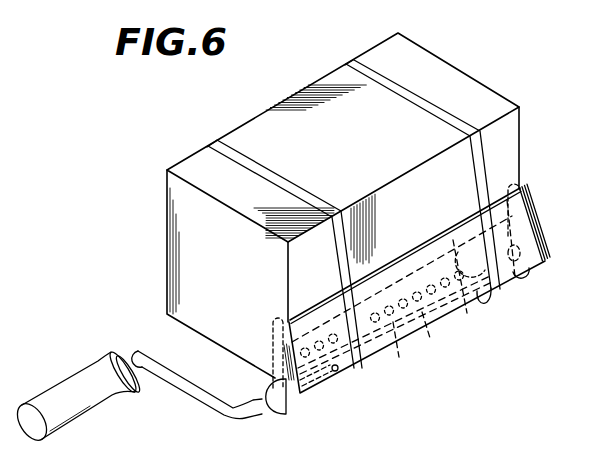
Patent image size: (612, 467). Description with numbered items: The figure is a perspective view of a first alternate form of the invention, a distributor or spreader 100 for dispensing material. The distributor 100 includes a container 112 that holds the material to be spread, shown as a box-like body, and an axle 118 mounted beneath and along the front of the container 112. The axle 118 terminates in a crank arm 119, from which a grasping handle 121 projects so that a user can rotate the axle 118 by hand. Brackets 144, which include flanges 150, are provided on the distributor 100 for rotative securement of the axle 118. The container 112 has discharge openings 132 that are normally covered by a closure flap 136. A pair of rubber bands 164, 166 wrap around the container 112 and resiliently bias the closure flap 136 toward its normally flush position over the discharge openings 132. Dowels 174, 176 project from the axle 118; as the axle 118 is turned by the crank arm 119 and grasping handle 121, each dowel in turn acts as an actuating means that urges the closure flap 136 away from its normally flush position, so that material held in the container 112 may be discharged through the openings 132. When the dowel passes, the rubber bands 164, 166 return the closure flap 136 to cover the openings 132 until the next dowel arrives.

The distributor 100 is at (483, 66).
The container 112 is at (303, 88).
The axle 118 is at (437, 321).
The crank arm 119 is at (206, 391).
The grasping handle 121 is at (90, 406).
The discharge openings 132 is at (465, 307).
The closure flap 136 is at (324, 386).
The brackets 144 is at (524, 197).
The flanges 150 is at (290, 415).
The rubber band 164 is at (288, 186).
The rubber band 166 is at (425, 97).
The dowel 174 is at (337, 372).
The dowel 176 is at (455, 239).